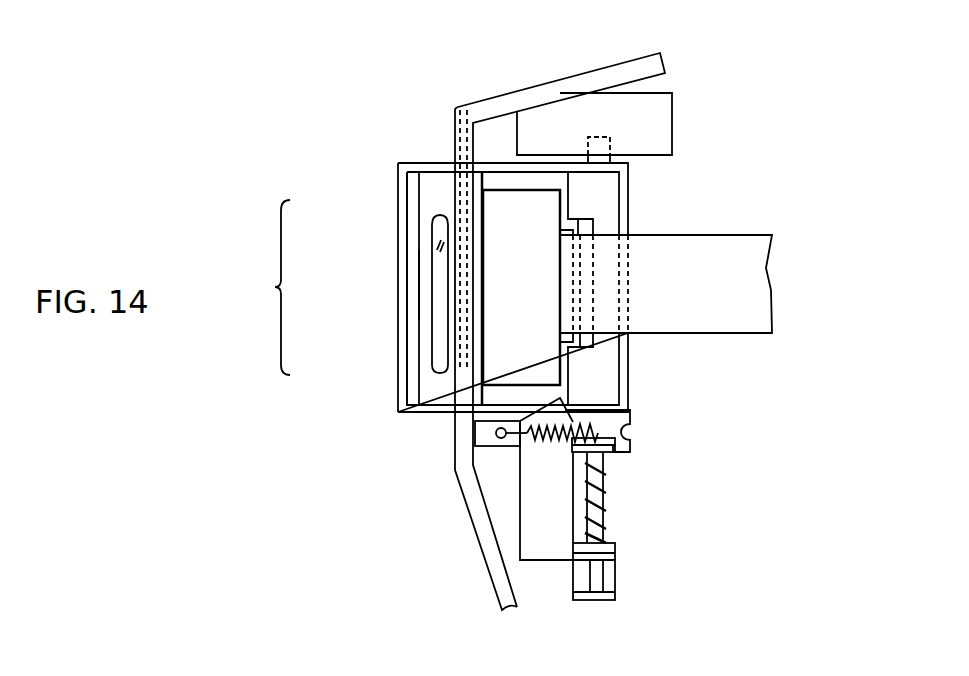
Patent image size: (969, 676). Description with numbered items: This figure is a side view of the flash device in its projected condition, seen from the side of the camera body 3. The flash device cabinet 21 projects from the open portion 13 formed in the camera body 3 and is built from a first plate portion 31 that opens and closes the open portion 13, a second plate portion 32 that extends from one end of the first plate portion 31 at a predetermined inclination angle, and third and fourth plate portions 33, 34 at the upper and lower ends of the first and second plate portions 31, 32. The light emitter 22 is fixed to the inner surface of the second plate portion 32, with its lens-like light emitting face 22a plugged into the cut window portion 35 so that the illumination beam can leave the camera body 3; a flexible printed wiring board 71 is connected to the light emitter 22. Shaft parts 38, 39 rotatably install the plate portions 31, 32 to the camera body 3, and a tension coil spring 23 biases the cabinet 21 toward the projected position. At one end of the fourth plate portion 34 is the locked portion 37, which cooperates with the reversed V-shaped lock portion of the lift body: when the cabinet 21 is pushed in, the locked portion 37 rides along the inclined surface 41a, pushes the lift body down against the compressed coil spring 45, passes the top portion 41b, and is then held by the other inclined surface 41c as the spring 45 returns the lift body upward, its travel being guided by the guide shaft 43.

The camera body 3 is at (610, 66).
The open portion 13 is at (455, 108).
The flash device cabinet 21 is at (329, 288).
The light emitter 22 is at (511, 188).
The light emitting face 22a is at (439, 208).
The tension coil spring 23 is at (598, 441).
The first plate portion 31 is at (398, 249).
The second plate portion 32 is at (427, 285).
The third plate portion 33 is at (402, 163).
The fourth plate portion 34 is at (402, 414).
The cut window portion 35 is at (433, 323).
The locked portion 37 is at (483, 411).
The shaft part 38 is at (610, 143).
The shaft part 39 is at (612, 412).
The inclined surface of lock portion 41a is at (476, 419).
The top portion of lock portion 41b is at (560, 400).
The inclined surface of lock portion 41c is at (573, 413).
The guide shaft 43 is at (606, 578).
The compressed coil spring 45 is at (607, 512).
The flexible printed wiring board 71 is at (703, 234).